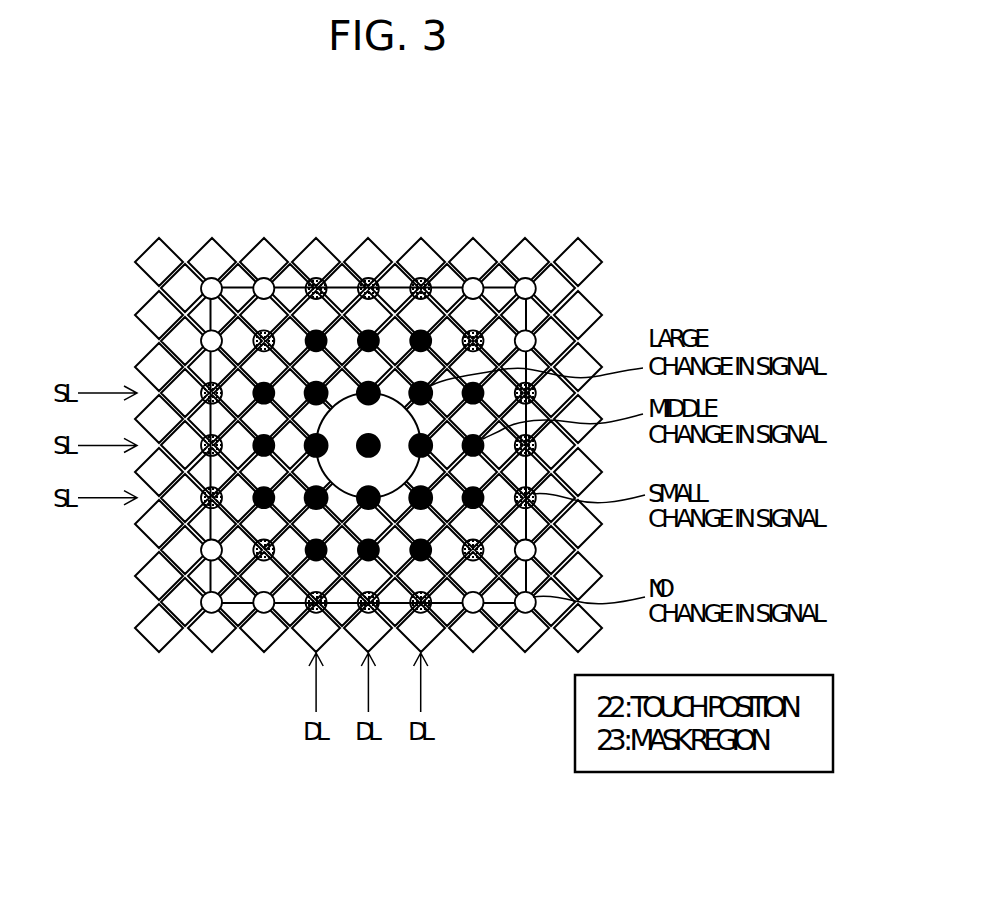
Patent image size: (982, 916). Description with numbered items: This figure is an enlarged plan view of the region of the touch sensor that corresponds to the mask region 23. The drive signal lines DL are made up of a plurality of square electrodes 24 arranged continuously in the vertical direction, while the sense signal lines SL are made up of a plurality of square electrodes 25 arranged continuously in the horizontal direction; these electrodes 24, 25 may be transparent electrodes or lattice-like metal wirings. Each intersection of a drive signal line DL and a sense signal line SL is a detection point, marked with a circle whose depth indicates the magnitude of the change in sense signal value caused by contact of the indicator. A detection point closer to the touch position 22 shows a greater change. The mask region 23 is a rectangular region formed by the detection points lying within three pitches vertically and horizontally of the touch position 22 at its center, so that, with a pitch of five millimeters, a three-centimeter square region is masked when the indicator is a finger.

The touch position 22 is at (392, 408).
The mask region 23 is at (494, 287).
The square electrode 24 is at (213, 638).
The square electrode 25 is at (173, 602).